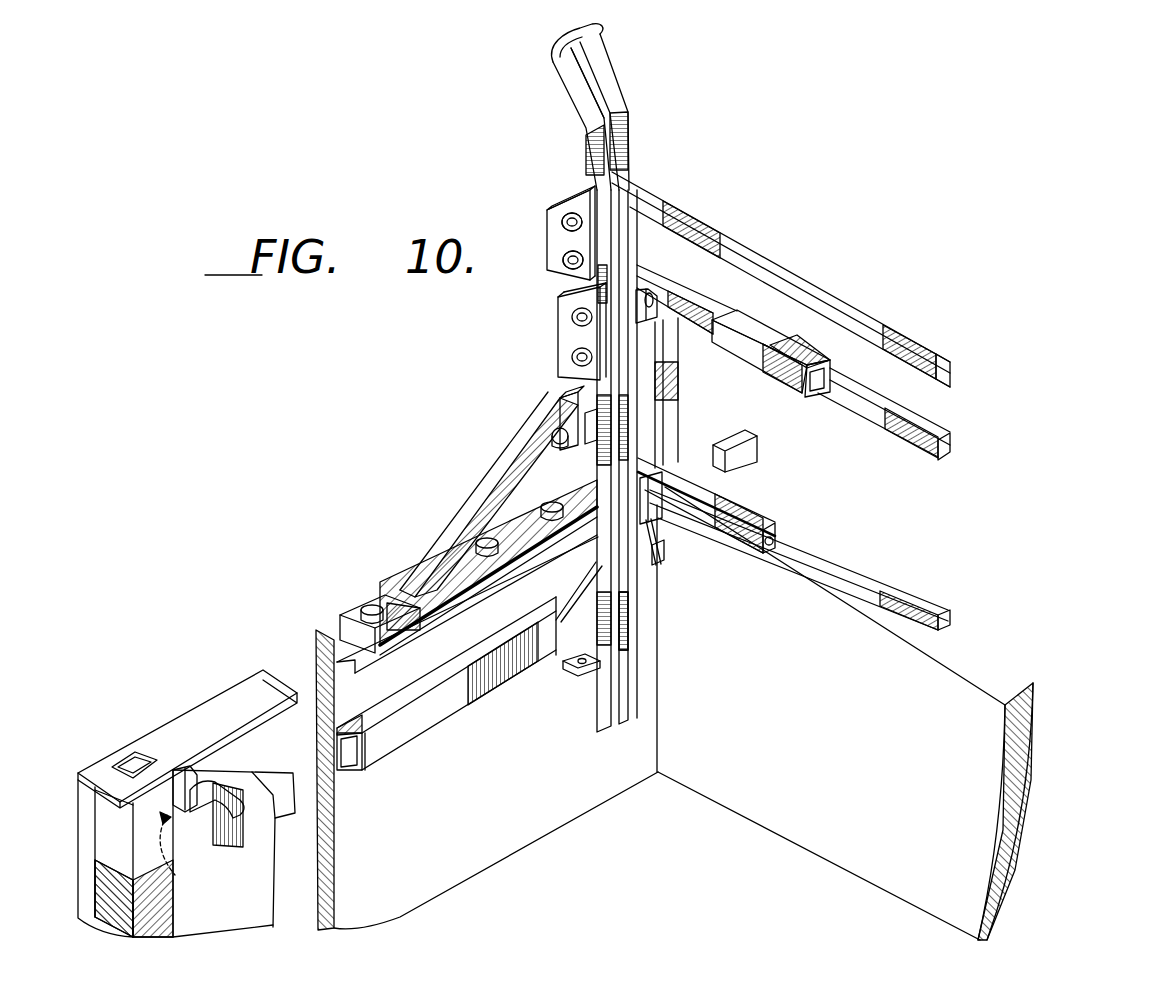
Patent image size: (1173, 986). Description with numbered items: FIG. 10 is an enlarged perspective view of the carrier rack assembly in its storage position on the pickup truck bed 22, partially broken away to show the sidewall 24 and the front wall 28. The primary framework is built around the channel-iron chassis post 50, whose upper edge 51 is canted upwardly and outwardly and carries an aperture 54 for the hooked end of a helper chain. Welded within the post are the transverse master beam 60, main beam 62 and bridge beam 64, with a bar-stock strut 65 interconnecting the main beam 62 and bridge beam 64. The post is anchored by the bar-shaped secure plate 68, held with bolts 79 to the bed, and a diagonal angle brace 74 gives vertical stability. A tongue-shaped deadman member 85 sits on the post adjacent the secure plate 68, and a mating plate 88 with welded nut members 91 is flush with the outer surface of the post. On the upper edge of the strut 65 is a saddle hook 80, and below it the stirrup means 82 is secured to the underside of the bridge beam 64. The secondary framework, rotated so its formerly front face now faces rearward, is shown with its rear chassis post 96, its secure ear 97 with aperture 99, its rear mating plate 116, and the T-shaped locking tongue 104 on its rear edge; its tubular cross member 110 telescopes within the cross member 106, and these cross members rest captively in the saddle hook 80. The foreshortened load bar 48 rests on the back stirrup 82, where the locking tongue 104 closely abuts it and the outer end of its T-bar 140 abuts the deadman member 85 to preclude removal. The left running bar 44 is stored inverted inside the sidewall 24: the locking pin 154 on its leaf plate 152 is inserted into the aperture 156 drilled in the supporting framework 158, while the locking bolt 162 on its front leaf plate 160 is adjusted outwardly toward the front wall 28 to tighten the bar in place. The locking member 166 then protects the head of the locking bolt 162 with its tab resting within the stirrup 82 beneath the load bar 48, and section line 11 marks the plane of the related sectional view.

The section line 11- 11 is at (498, 27).
The truckbed 22 is at (656, 871).
The sidewall 24 is at (235, 684).
The front wall 28 is at (906, 712).
The running bar 44 is at (368, 778).
The load bar 48 is at (712, 486).
The chassis post 50 is at (628, 150).
The upper edge 51 is at (597, 68).
The aperture 54 is at (580, 36).
The master beam 60 is at (815, 292).
The main beam 62 is at (893, 432).
The bridge beam 64 is at (903, 585).
The strut 65 is at (672, 380).
The secure plate 68 is at (388, 590).
The angle brace 74 is at (488, 485).
The bolt 79 is at (368, 605).
The saddle hook 80 is at (660, 306).
The stirrup means 82 is at (658, 548).
The deadman member 85 is at (552, 436).
The mating plate 88 is at (562, 204).
The nut member 91 is at (555, 258).
The chassis post 96 is at (598, 542).
The secure ear 97 is at (615, 650).
The aperture 99 is at (578, 667).
The locking tongue 104 is at (665, 452).
The cross member 106 is at (840, 335).
The cross member 110 is at (742, 282).
The rear mating plate 116 is at (560, 336).
The T-bar 140 is at (572, 410).
The leaf plate 152 is at (222, 847).
The locking pin 154 is at (187, 803).
The aperture 156 is at (185, 878).
The supporting framework 158 is at (160, 912).
The front leaf plate 160 is at (580, 617).
The locking bolt 162 is at (660, 572).
The locking member 166 is at (663, 550).